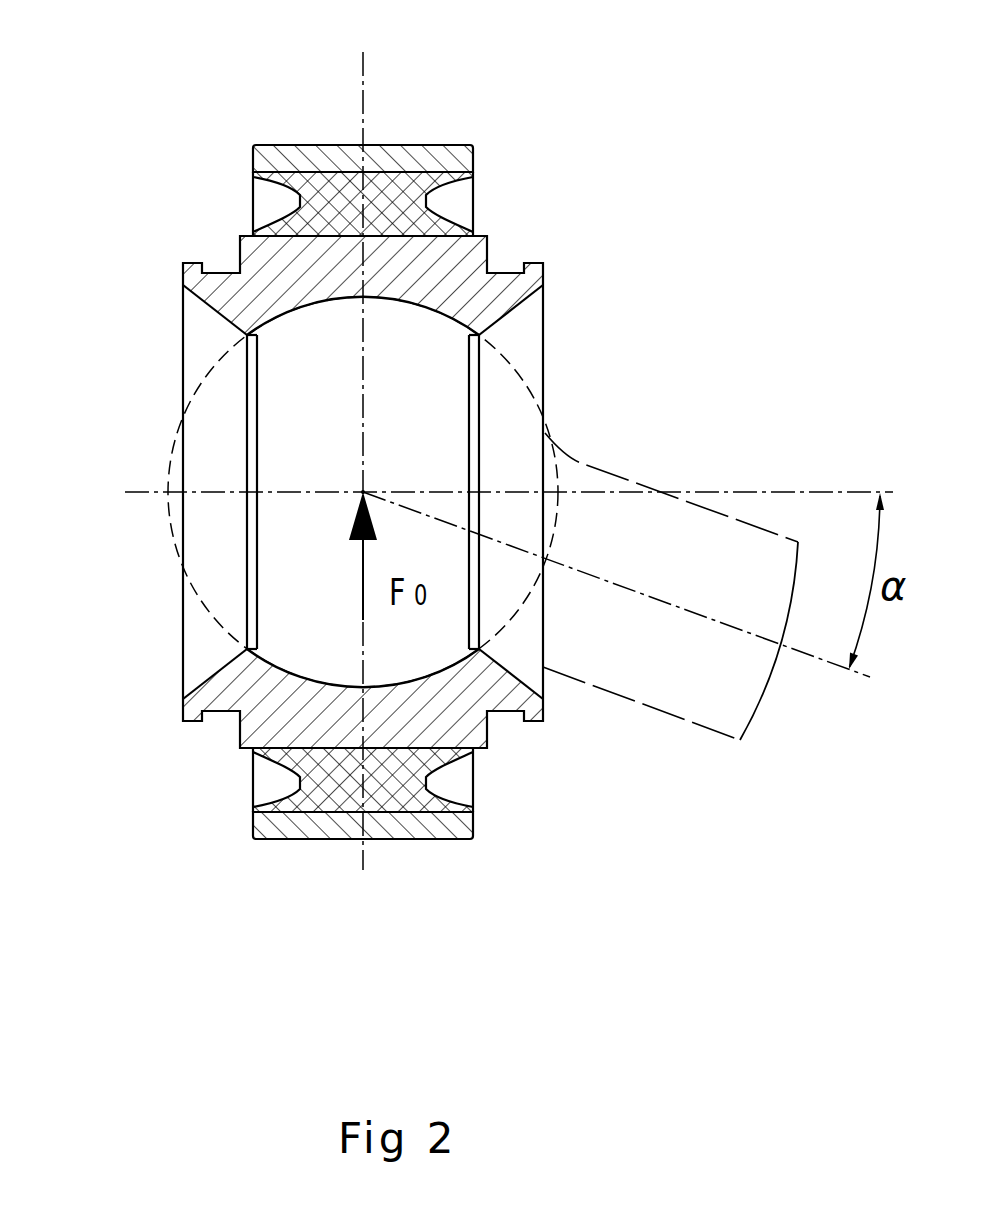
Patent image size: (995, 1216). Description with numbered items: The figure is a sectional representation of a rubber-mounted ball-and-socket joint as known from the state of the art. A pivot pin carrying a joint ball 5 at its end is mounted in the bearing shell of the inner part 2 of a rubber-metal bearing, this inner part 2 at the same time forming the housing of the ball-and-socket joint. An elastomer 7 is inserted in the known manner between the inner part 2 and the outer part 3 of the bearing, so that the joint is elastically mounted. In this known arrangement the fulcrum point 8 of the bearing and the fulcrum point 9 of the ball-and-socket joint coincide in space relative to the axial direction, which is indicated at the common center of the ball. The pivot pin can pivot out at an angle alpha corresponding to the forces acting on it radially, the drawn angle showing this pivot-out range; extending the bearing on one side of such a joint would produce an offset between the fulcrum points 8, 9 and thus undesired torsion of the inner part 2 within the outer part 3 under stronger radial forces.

The inner part 2 is at (395, 393).
The outer part 3 is at (375, 428).
The joint ball 5 is at (314, 377).
The elastomer 7 is at (334, 408).
The fulcrum point of the bearing 8 is at (509, 394).
The fulcrum point of the ball-and-socket joint 9 is at (616, 586).